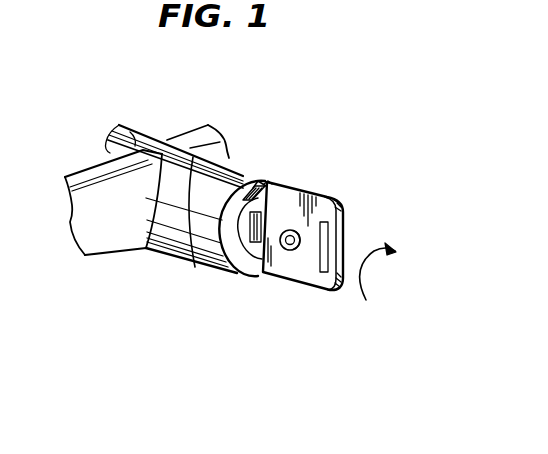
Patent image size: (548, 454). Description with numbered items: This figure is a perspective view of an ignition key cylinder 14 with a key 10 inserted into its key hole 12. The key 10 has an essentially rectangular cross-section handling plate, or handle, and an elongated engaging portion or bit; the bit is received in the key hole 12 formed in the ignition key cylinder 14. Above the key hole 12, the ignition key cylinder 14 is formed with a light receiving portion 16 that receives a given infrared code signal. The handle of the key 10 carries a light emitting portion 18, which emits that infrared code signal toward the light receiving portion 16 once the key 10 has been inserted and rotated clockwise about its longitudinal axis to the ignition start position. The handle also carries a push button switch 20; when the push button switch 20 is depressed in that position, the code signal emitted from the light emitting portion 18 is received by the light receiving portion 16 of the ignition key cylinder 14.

The key 10 is at (319, 180).
The key hole 12 is at (254, 245).
The ignition key cylinder 14 is at (173, 248).
The light receiving portion 16 is at (254, 180).
The light emitting portion 18 is at (265, 183).
The push button switch 20 is at (296, 253).